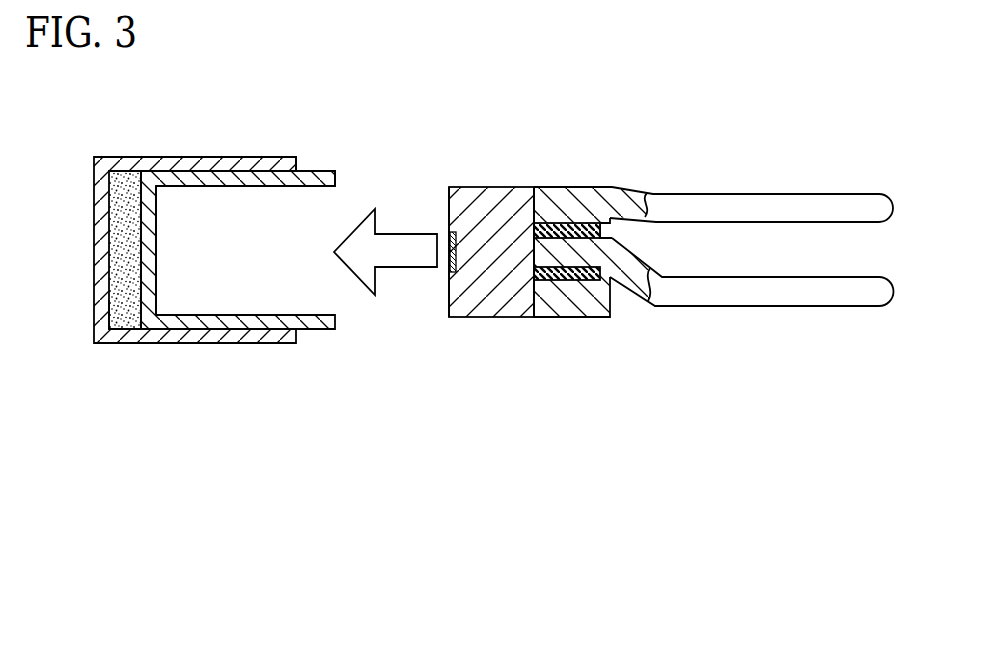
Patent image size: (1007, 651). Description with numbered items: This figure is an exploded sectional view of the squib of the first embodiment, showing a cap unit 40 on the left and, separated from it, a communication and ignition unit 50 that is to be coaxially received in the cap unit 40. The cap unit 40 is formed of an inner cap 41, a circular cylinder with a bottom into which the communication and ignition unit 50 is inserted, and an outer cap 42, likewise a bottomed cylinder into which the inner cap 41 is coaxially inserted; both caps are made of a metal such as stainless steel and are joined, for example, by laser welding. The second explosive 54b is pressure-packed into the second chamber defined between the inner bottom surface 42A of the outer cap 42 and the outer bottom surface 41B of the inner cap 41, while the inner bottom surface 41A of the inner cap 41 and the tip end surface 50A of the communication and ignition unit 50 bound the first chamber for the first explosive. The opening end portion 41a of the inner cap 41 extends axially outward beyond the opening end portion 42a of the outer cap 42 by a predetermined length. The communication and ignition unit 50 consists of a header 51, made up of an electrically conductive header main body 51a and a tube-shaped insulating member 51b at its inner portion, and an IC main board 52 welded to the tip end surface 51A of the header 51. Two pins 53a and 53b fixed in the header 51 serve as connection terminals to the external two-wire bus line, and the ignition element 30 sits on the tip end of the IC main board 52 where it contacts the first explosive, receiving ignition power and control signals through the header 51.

The ignition element 30 is at (448, 270).
The cap unit 40 is at (185, 253).
The inner cap 41 is at (225, 215).
The inner bottom surface of inner cap 41A is at (157, 243).
The outer bottom surface of inner cap 41B is at (138, 187).
The opening end portion of inner cap 41a is at (326, 171).
The outer cap 42 is at (195, 253).
The inner bottom surface of outer cap 42A is at (118, 315).
The opening end portion of outer cap 42a is at (259, 157).
The communication and ignition unit 50 is at (633, 260).
The tip end surface of communication and ignition unit 50A is at (448, 210).
The header 51 is at (689, 292).
The tip end surface of header 51A is at (509, 281).
The header main body 51a is at (573, 317).
The insulating member 51b is at (610, 277).
The IC main board 52 is at (453, 280).
The pin 53a is at (768, 193).
The pin 53b is at (768, 277).
The second explosive 54b is at (120, 251).